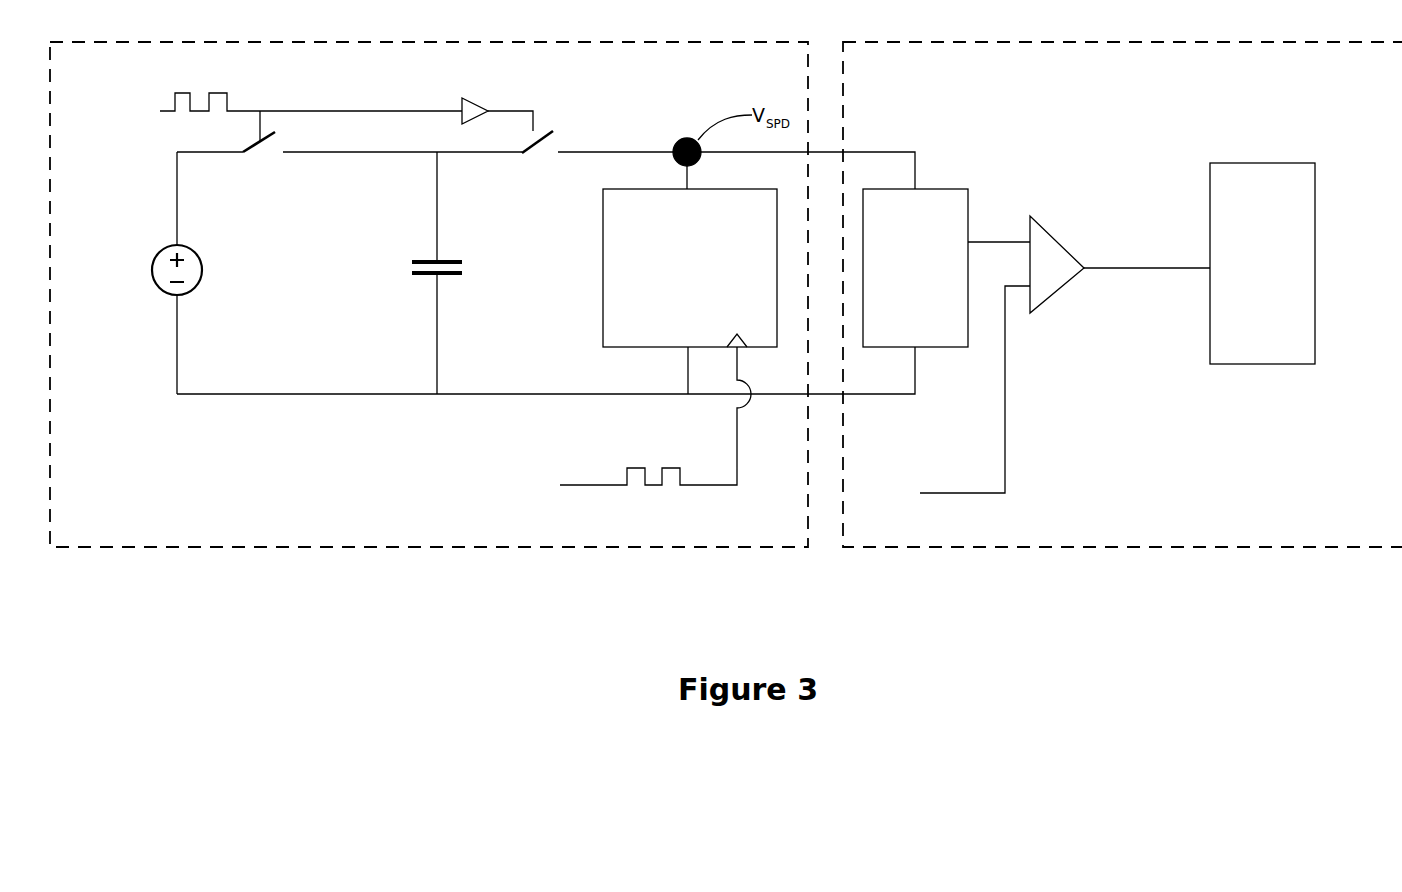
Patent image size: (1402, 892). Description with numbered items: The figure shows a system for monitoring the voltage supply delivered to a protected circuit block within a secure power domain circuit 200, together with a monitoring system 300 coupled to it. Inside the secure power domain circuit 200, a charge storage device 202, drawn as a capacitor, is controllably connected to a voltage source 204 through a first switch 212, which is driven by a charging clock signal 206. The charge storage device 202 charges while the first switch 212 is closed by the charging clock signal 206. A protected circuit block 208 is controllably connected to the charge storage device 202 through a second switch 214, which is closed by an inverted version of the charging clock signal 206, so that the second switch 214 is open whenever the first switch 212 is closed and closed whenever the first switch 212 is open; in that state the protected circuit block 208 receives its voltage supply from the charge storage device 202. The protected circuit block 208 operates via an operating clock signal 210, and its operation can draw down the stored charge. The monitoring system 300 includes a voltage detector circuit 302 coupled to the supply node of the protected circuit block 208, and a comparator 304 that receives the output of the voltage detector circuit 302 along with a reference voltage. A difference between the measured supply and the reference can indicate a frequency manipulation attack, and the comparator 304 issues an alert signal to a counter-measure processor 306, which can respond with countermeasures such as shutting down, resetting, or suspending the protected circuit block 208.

The secure power domain circuit 200 is at (355, 548).
The charge storage device 202 is at (409, 273).
The voltage source 204 is at (153, 273).
The charging clock signal 206 is at (222, 93).
The protected circuit block 208 is at (690, 291).
The operating clock signal 210 is at (579, 436).
The first switch S1 212 is at (262, 144).
The second switch S2 214 is at (541, 143).
The monitoring system 300 is at (1108, 547).
The voltage detector circuit 302 is at (915, 268).
The comparator 304 is at (1056, 240).
The counter-measure processor 306 is at (1262, 263).